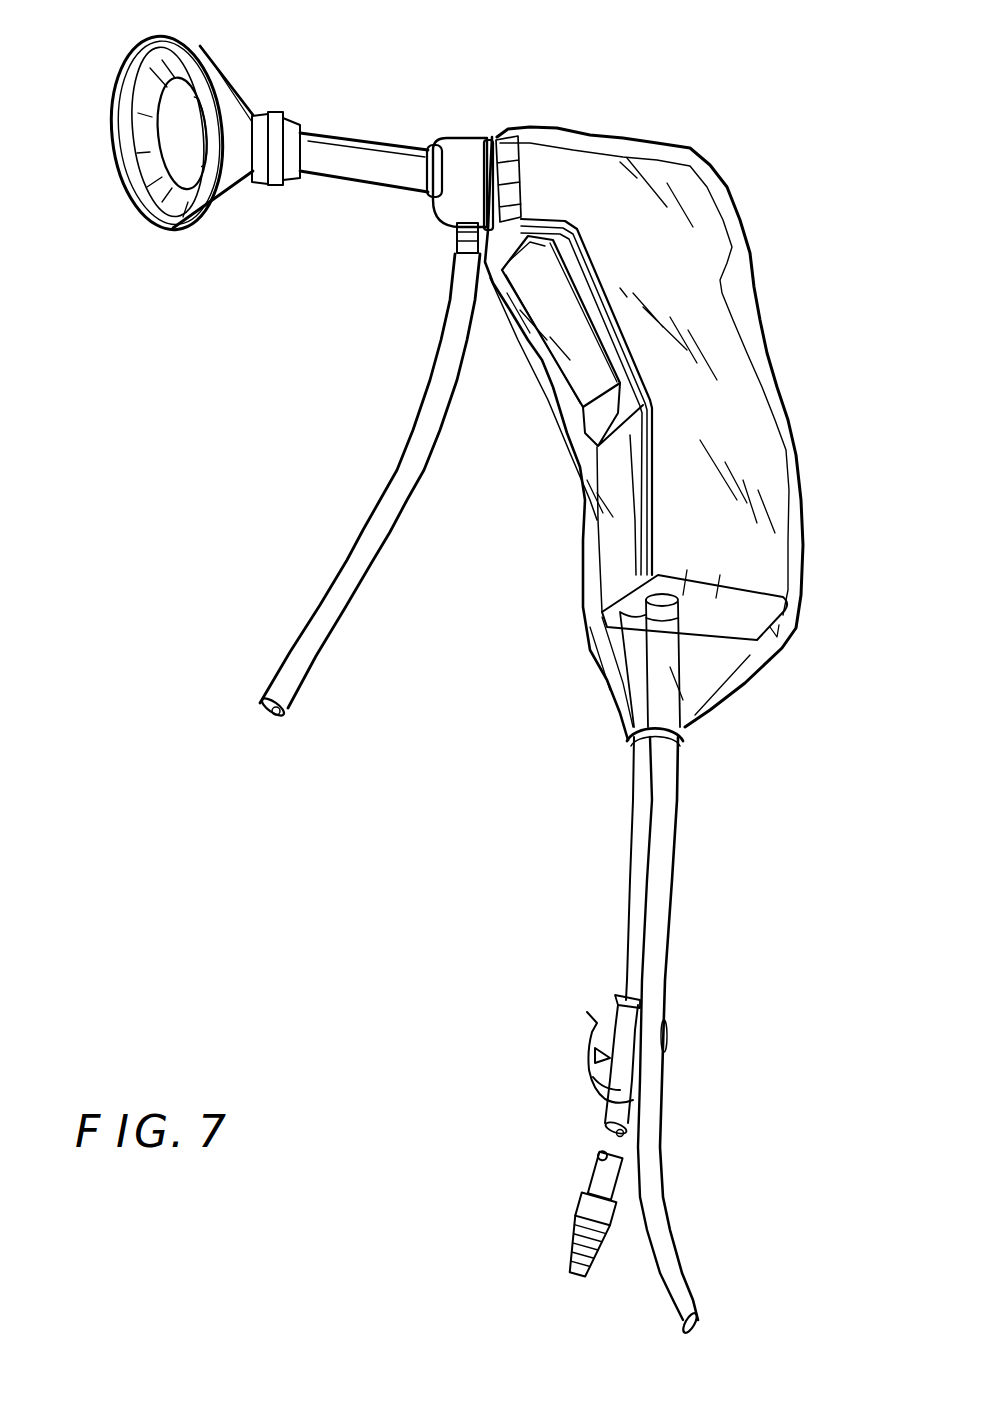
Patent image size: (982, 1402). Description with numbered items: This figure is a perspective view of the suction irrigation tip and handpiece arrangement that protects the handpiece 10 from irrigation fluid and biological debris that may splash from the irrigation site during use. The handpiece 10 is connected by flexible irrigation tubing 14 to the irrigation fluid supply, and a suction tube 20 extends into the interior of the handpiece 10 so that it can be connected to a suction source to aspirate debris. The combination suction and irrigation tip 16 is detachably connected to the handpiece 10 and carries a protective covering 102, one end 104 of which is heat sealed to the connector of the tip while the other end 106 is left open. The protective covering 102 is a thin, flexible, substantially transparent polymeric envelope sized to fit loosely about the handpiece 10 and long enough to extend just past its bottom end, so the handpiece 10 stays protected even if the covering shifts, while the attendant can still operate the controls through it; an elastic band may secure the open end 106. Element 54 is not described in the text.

The handpiece 10 is at (597, 183).
The flexible irrigation tubing 14 is at (665, 840).
The combination suction and irrigation tip 16 is at (362, 128).
The suction tube 20 is at (384, 500).
The breast shield funnel 54 is at (224, 63).
The protective covering 102 is at (757, 303).
The end of protective covering 104 is at (478, 119).
The open end of protective covering 106 is at (686, 744).